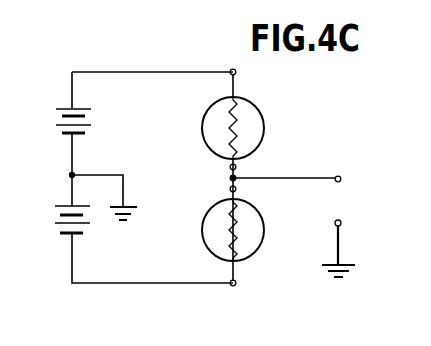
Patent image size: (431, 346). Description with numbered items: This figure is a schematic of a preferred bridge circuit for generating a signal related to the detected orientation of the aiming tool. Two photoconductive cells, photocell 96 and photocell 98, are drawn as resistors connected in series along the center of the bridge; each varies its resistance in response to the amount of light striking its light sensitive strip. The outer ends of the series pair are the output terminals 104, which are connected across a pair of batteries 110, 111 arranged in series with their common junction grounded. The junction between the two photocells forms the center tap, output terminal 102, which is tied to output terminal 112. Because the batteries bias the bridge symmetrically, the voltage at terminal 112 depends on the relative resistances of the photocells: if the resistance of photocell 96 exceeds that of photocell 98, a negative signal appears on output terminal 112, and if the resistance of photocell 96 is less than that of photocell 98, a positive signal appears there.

The photocell 96 is at (264, 134).
The photocell 98 is at (264, 245).
The output terminal 102 is at (229, 189).
The output terminal 104 is at (232, 68).
The battery 110 is at (53, 110).
The battery 111 is at (54, 213).
The output terminal 112 is at (336, 175).